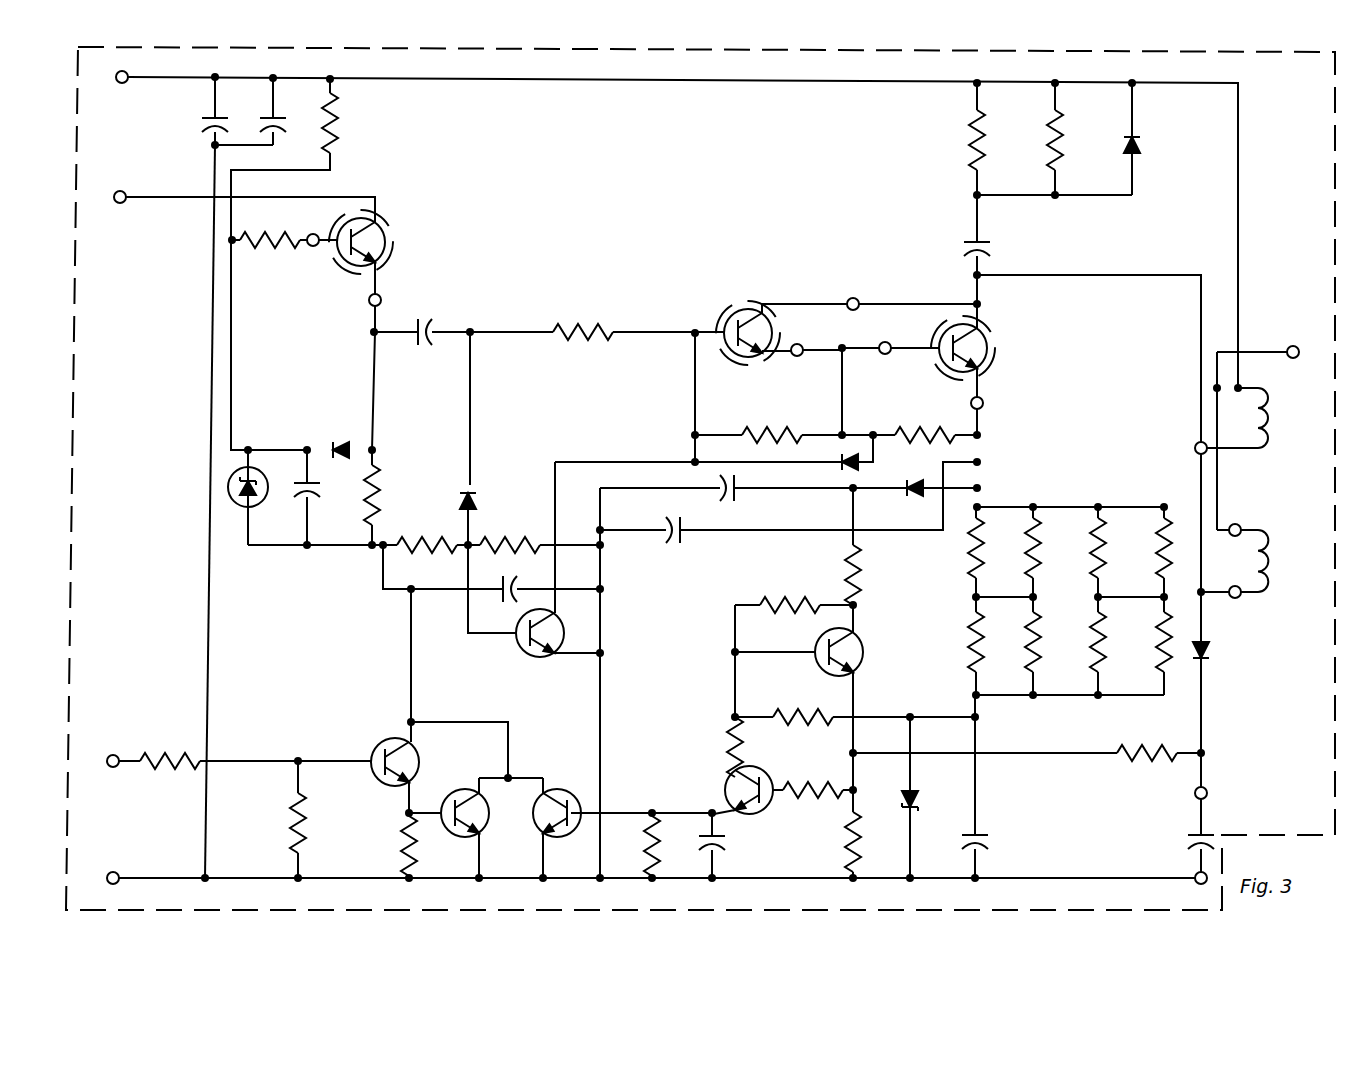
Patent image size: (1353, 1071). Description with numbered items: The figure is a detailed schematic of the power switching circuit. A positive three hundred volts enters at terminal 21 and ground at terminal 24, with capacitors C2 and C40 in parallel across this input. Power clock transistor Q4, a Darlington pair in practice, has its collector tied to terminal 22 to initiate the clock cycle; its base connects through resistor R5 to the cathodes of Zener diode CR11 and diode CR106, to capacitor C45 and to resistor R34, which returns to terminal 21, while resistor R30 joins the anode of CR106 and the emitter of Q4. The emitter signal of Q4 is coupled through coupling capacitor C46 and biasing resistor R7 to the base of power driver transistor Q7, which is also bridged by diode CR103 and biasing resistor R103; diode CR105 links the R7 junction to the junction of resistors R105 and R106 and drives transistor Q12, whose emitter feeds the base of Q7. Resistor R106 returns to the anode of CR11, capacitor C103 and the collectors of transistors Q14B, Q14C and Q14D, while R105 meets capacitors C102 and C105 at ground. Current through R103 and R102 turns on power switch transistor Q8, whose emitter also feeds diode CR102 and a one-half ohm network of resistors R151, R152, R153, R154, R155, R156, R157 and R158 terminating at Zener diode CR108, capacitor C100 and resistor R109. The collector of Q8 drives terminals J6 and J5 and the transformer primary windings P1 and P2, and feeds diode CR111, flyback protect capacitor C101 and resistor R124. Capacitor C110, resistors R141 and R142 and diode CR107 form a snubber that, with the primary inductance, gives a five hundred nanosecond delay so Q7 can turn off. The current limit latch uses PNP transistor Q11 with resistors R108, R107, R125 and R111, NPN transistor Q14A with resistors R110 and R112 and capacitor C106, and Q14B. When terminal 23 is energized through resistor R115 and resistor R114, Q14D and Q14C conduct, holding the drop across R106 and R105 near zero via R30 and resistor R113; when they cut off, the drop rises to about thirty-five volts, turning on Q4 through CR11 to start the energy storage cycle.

The terminal 21 is at (121, 83).
The terminal 22 is at (119, 204).
The terminal 23 is at (116, 754).
The terminal 24 is at (116, 872).
The capacitor C2 is at (204, 111).
The capacitor C40 is at (258, 111).
The resistor R34 is at (352, 123).
The resistor R5 is at (279, 253).
The power clock transistor Q4 is at (361, 258).
The coupling capacitor C46 is at (425, 320).
The biasing resistor R7 is at (583, 317).
The Zener diode CR11 is at (227, 487).
The diode CR106 is at (328, 436).
The resistor R30 is at (390, 490).
The capacitor C45 is at (321, 497).
The resistor R106 is at (425, 532).
The resistor R105 is at (510, 531).
The diode CR105 is at (502, 495).
The capacitor C103 is at (510, 578).
The transistor Q12 is at (516, 635).
The power driver transistor Q7 is at (772, 330).
The power switch transistor Q8 is at (937, 359).
The biasing resistor R103 is at (769, 421).
The resistor R102 is at (925, 422).
The diode CR103 is at (813, 470).
The diode CR102 is at (896, 500).
The capacitor C105 is at (723, 499).
The capacitor C102 is at (672, 543).
The resistor R107 is at (881, 575).
The resistor R141 is at (951, 140).
The resistor R142 is at (1031, 146).
The diode CR107 is at (1163, 157).
The capacitor C110 is at (999, 235).
The resistor R151 is at (961, 554).
The resistor R152 is at (1018, 546).
The resistor R153 is at (1083, 548).
The resistor R154 is at (1148, 548).
The resistor R155 is at (959, 642).
The resistor R156 is at (1017, 642).
The resistor R157 is at (1083, 642).
The resistor R158 is at (1148, 642).
The terminal J6 is at (1186, 434).
The terminal J5 is at (1233, 604).
The primary winding P1 is at (1256, 397).
The primary winding P2 is at (1265, 558).
The diode CR111 is at (1236, 654).
The resistor R124 is at (1147, 740).
The capacitor C100 is at (1002, 841).
The flyback protect capacitor C101 is at (1175, 835).
The Zener diode CR108 is at (922, 813).
The resistor R108 is at (790, 594).
The resistor R109 is at (803, 705).
The resistor R110 is at (706, 747).
The resistor R111 is at (812, 777).
The PNP transistor Q11 is at (858, 658).
The NPN transistor Q14A is at (716, 790).
The capacitor C106 is at (740, 840).
The resistor R125 is at (824, 842).
The resistor R112 is at (636, 846).
The resistor R115 is at (170, 772).
The resistor R114 is at (271, 823).
The resistor R113 is at (381, 846).
The NPN transistor Q14D is at (366, 760).
The NPN transistor Q14C is at (457, 801).
The NPN transistor Q14B is at (562, 796).